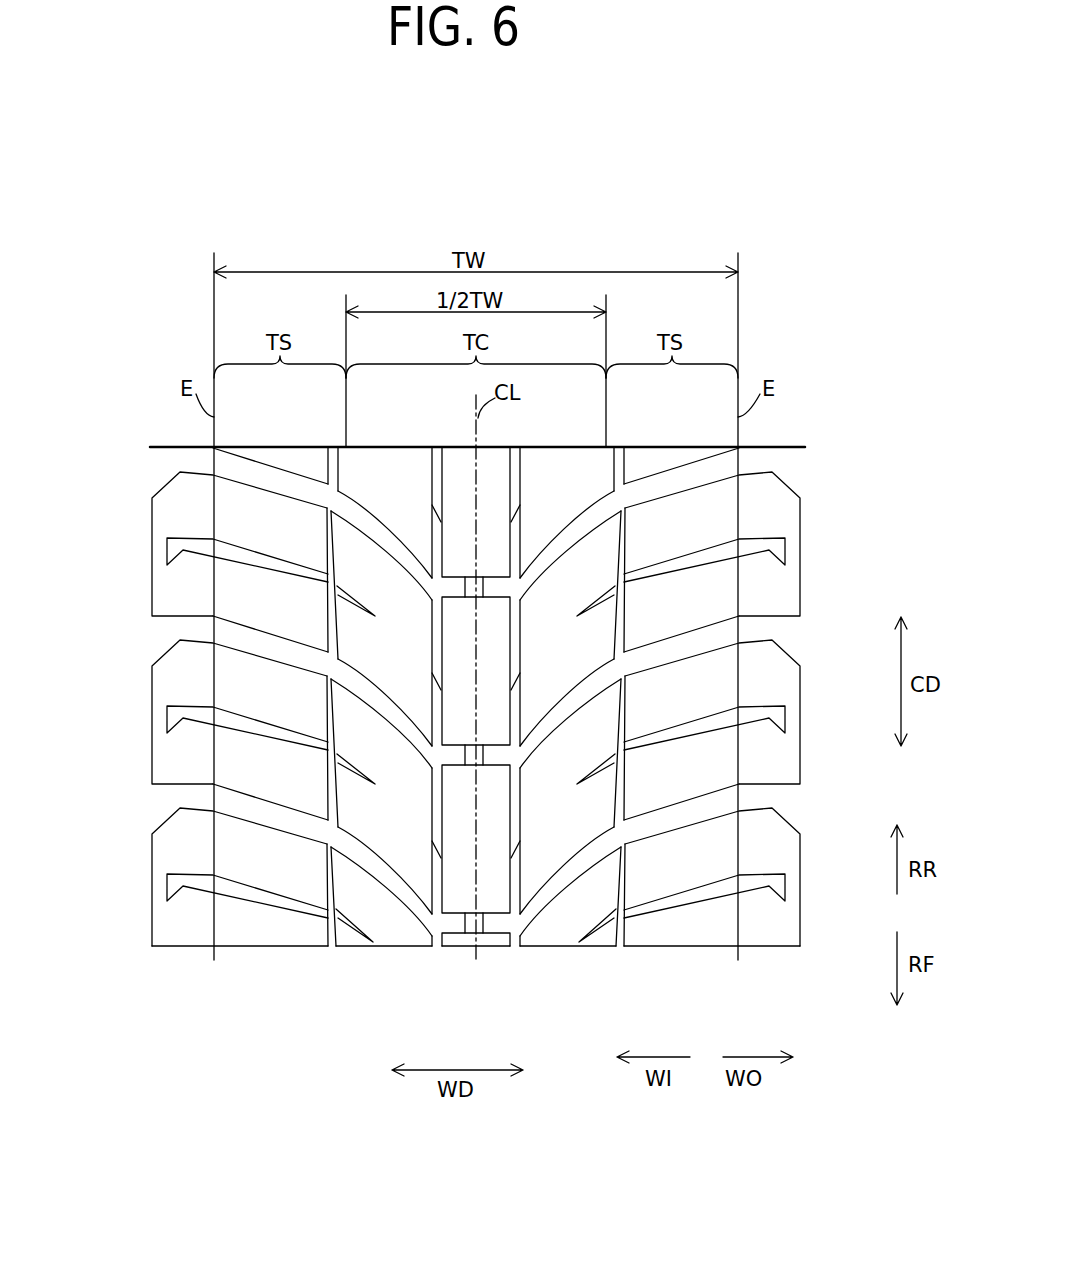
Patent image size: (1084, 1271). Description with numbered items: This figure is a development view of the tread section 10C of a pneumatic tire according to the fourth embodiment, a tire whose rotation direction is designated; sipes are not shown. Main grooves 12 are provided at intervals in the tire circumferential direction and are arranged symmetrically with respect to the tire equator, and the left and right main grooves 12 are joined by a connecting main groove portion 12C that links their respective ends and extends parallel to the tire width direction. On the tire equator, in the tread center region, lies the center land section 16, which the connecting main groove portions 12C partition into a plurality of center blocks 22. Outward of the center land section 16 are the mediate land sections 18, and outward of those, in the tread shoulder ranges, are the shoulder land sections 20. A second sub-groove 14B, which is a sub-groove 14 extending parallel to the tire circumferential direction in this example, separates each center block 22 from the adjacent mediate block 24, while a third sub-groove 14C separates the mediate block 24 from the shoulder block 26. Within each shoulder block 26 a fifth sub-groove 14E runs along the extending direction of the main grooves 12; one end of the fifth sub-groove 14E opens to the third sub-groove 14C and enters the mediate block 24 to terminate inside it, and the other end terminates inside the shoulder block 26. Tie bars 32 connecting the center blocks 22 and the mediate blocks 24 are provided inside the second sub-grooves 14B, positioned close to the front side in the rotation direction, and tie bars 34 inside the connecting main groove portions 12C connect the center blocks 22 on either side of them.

The tread section 10C is at (497, 204).
The main groove 12 is at (190, 628).
The connecting main groove portion 12C is at (438, 748).
The sub-groove 14 is at (410, 778).
The second sub-groove 14B is at (437, 812).
The third sub-groove 14C is at (338, 447).
The fifth sub-groove 14E is at (233, 550).
The center land section 16 is at (455, 430).
The mediate land section 18 is at (377, 432).
The shoulder land section 20 is at (249, 432).
The center block 22 is at (497, 692).
The mediate block 24 is at (373, 826).
The shoulder block 26 is at (158, 513).
The tie bar 32 is at (522, 530).
The tie bar 34 is at (462, 757).